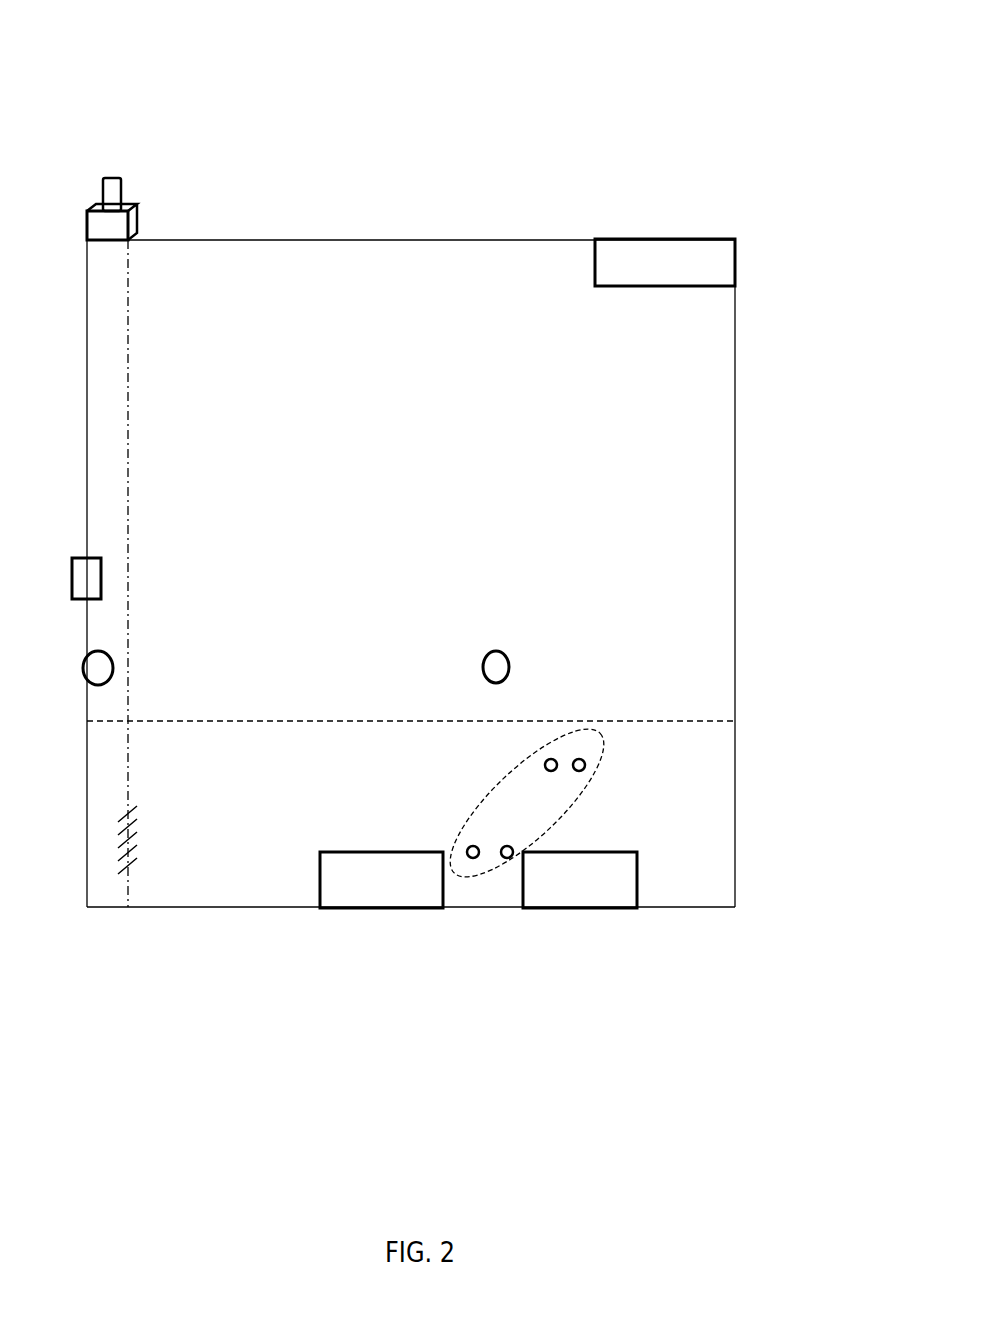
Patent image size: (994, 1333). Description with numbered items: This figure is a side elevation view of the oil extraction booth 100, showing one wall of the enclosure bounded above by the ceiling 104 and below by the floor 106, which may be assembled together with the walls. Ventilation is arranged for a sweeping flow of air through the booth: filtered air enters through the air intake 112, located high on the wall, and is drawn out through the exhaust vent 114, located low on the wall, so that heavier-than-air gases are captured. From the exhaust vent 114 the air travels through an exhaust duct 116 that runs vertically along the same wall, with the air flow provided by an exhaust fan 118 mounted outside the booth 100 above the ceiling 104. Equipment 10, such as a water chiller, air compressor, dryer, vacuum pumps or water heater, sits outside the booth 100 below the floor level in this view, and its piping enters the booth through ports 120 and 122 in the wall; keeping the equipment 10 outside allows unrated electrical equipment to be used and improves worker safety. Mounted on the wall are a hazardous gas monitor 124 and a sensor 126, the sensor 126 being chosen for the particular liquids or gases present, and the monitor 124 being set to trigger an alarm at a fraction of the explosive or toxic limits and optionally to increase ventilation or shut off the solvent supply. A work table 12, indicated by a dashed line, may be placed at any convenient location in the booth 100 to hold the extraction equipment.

The oil extraction booth 100 is at (547, 150).
The ceiling 104 is at (320, 240).
The floor 106 is at (192, 907).
The air intake 112 is at (617, 287).
The exhaust vent 114 is at (137, 821).
The exhaust duct 116 is at (128, 398).
The exhaust fan 118 is at (118, 175).
The ports 120 is at (573, 805).
The port 122 is at (486, 650).
The hazardous gas monitor 124 is at (101, 574).
The sensor 126 is at (112, 658).
The work table 12 is at (685, 720).
The equipment 10 is at (542, 908).